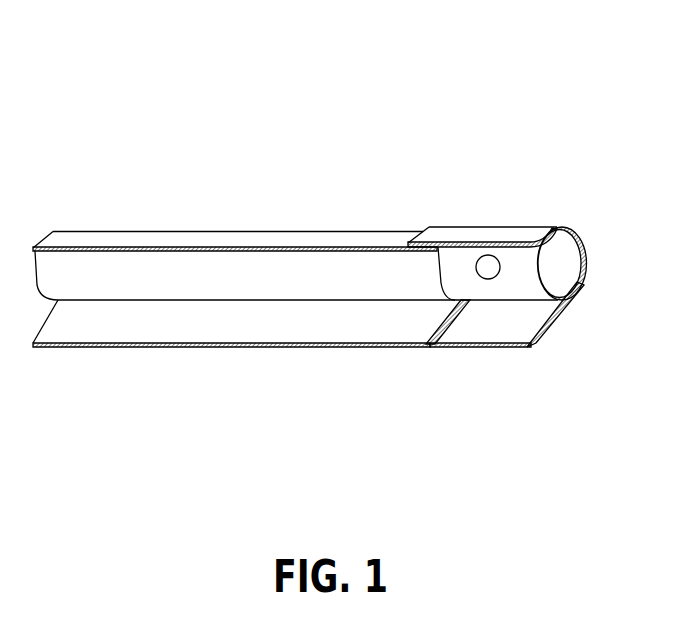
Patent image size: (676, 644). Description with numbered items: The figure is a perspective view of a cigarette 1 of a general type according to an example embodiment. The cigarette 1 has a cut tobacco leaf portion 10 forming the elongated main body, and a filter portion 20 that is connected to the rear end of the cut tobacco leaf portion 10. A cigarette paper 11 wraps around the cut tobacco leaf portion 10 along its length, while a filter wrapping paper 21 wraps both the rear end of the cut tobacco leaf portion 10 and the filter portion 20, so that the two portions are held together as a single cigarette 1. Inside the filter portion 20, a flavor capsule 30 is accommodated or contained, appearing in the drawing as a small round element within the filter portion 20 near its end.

The cigarette 1 is at (318, 60).
The cut tobacco leaf portion 10 is at (201, 285).
The cigarette paper 11 is at (330, 337).
The filter portion 20 is at (525, 273).
The filter wrapping paper 21 is at (508, 341).
The flavor capsule 30 is at (485, 253).